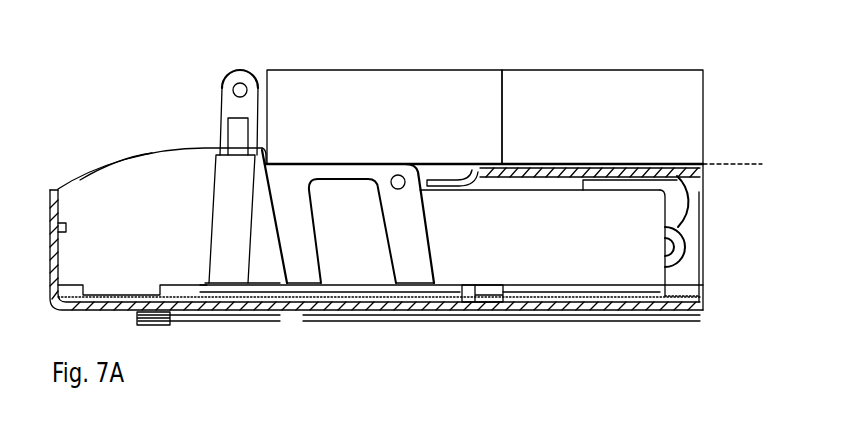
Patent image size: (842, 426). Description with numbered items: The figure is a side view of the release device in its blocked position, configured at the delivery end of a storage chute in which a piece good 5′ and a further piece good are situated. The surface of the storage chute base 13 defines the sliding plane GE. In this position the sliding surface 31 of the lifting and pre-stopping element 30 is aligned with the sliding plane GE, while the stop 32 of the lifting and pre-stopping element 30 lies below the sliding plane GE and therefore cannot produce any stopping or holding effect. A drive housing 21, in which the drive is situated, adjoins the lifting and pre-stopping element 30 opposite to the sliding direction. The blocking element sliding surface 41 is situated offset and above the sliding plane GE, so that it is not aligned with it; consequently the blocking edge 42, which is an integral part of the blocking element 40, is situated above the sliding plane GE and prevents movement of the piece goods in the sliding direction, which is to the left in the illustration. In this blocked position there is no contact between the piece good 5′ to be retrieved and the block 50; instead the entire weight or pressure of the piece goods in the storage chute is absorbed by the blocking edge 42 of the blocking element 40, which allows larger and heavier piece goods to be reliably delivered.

The blocking element 40 is at (105, 193).
The blocking element sliding surface 41 is at (237, 152).
The blocking edge 42 is at (266, 153).
The block 50 is at (242, 108).
The lifting and pre-stopping element 30 is at (295, 245).
The sliding surface 31 is at (367, 166).
The stop 32 is at (423, 165).
The storage chute base 13 is at (583, 168).
The drive housing 21 is at (625, 240).
The piece good 5′ is at (472, 97).
The sliding plane GE is at (732, 154).